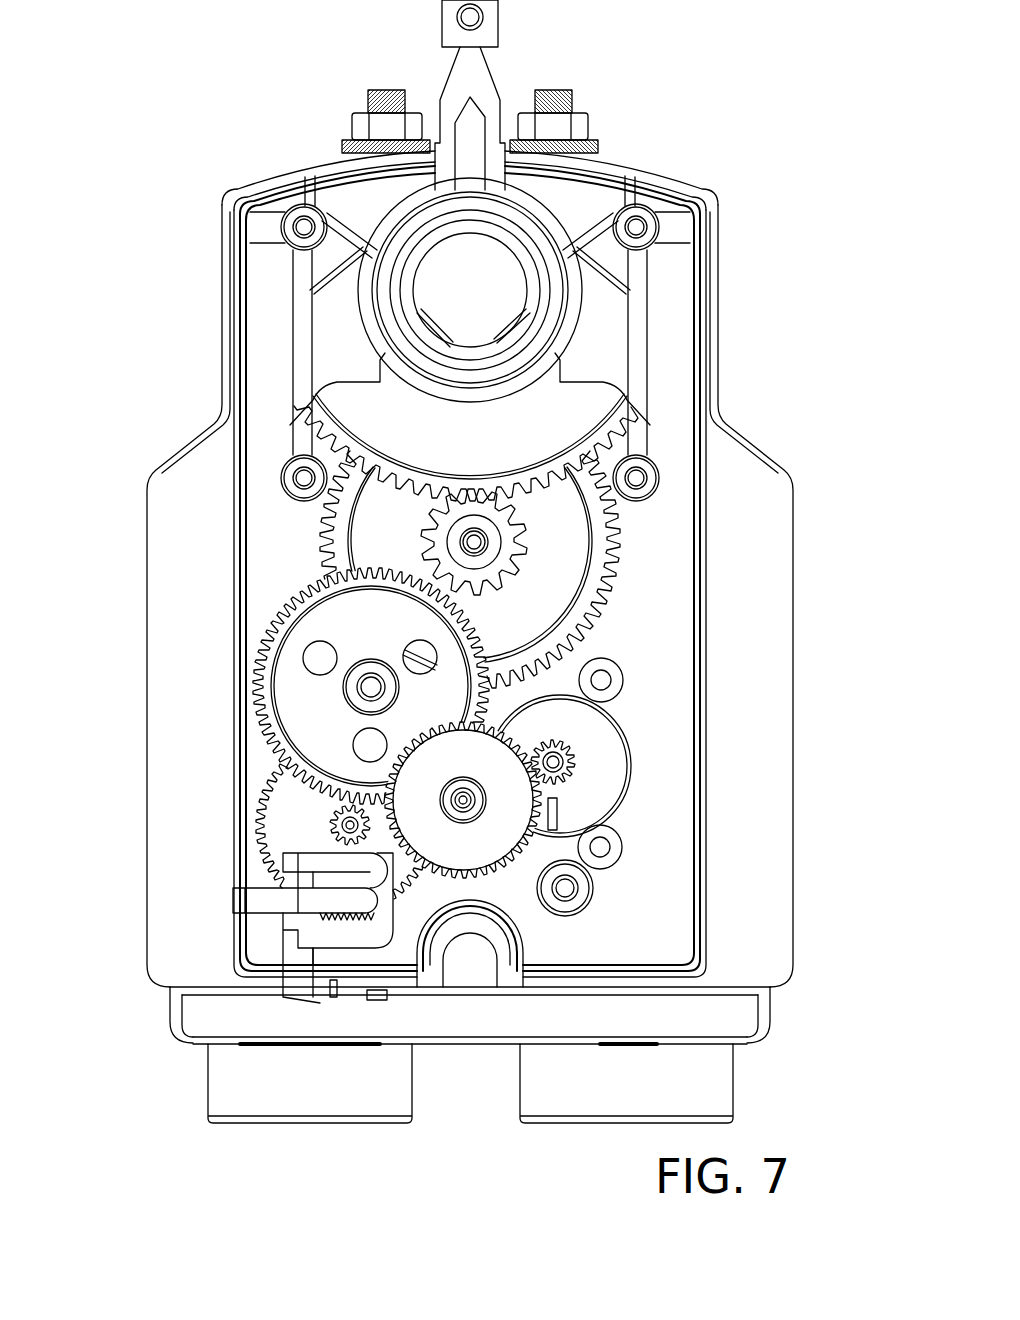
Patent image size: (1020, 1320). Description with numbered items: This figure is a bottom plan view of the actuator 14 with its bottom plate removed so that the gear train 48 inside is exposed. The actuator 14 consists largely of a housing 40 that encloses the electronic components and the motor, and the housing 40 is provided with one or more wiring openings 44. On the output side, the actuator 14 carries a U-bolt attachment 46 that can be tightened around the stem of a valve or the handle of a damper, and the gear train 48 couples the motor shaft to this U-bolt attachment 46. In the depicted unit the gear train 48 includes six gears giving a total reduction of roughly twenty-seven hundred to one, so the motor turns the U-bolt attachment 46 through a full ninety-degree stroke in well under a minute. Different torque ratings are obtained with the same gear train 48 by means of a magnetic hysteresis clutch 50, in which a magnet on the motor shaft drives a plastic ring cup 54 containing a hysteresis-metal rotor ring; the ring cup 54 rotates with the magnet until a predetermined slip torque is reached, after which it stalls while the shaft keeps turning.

The actuator 14 is at (227, 93).
The housing 40 is at (708, 362).
The wiring openings 44 is at (333, 1123).
The U-bolt attachment 46 is at (571, 100).
The gear train 48 is at (640, 622).
The magnetic hysteresis clutch 50 is at (645, 790).
The ring cup 54 is at (597, 770).